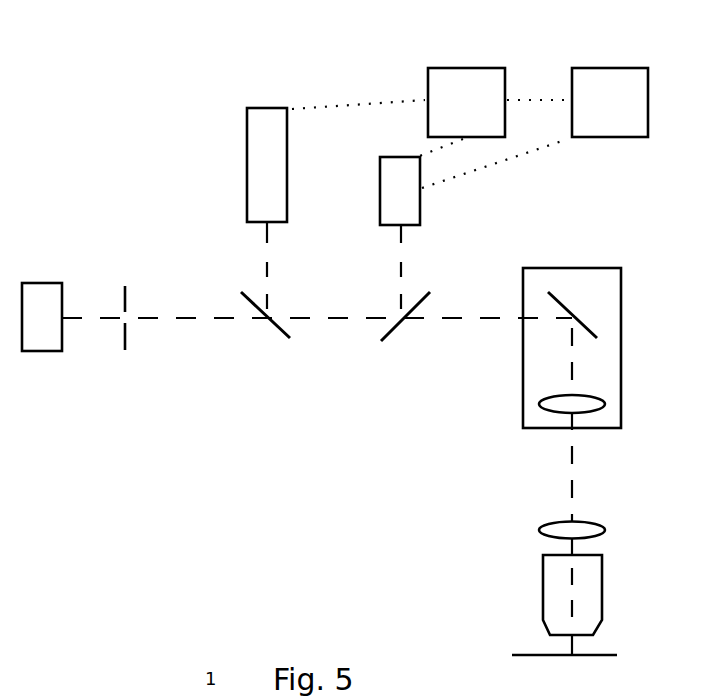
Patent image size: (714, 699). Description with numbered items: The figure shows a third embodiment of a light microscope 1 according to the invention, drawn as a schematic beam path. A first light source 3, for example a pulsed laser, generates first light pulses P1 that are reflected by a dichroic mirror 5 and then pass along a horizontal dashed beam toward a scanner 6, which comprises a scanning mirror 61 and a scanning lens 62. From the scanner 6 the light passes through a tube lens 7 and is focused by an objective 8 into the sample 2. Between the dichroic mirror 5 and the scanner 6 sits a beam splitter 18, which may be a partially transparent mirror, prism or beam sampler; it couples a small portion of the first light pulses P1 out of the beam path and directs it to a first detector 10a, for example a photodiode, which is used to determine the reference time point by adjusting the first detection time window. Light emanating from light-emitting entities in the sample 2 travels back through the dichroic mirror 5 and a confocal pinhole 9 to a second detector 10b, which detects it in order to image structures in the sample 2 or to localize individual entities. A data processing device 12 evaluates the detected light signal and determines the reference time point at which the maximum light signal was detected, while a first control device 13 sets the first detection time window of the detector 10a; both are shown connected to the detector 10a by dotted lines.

The light microscope 1 is at (297, 83).
The first control device 13 is at (467, 67).
The data processing device 12 is at (610, 67).
The first light source 3 is at (287, 160).
The first detector 10a is at (420, 203).
The second detector 10b is at (42, 351).
The confocal pinhole 9 is at (134, 341).
The first light pulses P1 is at (217, 321).
The dichroic mirror 5 is at (287, 338).
The beam splitter 18 is at (396, 328).
The scanner 6 is at (622, 347).
The scanning mirror 61 is at (565, 305).
The scanning lens 62 is at (605, 403).
The tube lens 7 is at (538, 530).
The objective 8 is at (543, 590).
The sample 2 is at (617, 655).